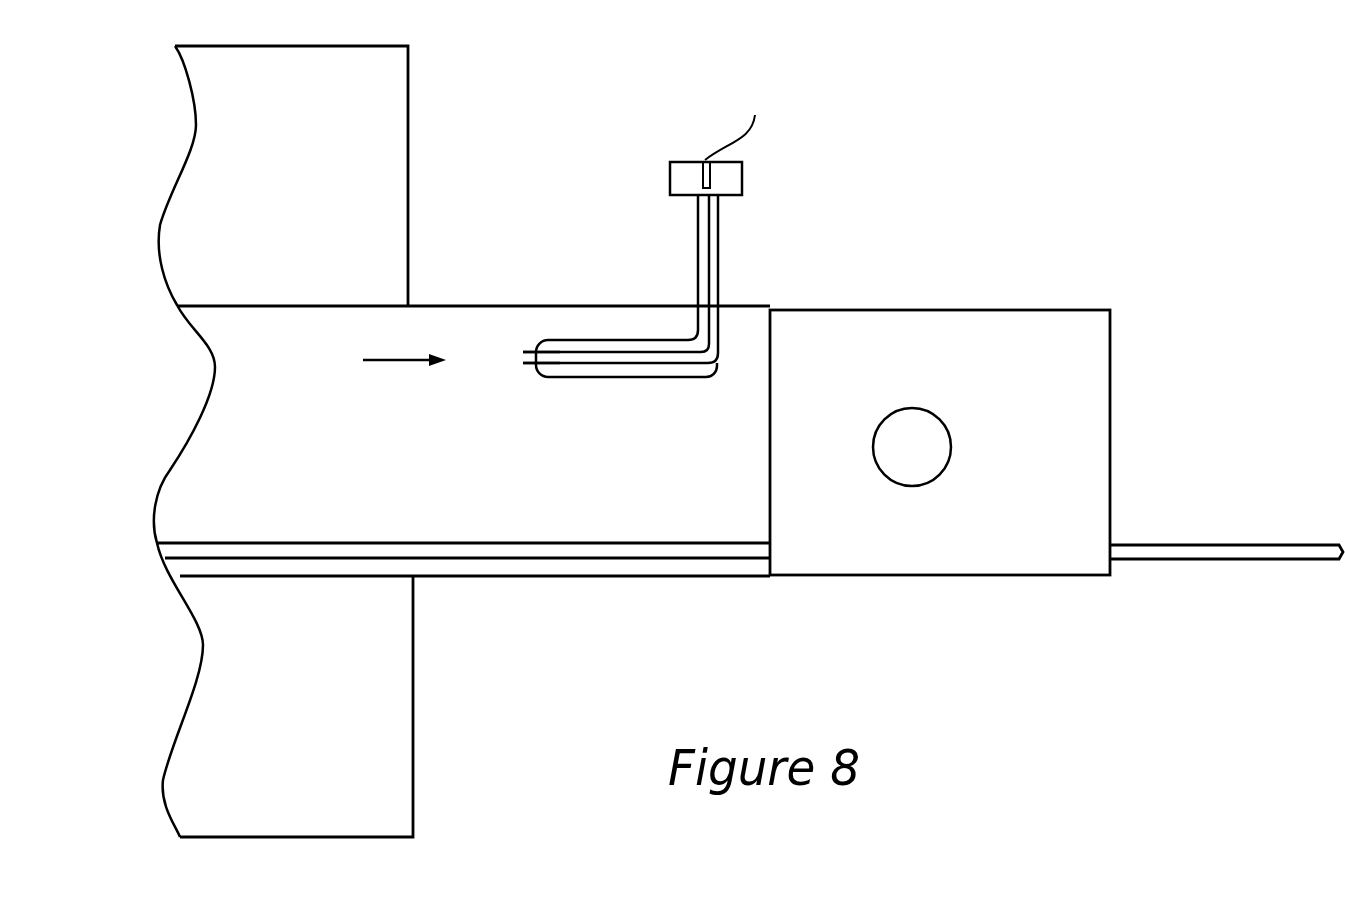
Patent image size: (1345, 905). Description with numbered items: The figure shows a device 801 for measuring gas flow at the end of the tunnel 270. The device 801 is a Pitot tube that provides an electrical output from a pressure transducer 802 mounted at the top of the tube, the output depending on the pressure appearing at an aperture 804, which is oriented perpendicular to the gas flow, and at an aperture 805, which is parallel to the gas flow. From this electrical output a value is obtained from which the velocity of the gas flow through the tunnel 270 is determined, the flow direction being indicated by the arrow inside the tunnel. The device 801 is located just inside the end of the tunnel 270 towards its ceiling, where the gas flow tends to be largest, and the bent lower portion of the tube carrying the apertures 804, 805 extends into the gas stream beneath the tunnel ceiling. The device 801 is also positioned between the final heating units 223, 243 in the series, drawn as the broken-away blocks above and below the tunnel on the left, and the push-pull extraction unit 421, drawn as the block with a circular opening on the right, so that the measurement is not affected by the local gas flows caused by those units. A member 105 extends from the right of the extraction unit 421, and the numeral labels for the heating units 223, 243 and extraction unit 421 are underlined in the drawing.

The final heating unit 223 is at (305, 182).
The final heating unit 243 is at (308, 715).
The tunnel 270 is at (578, 576).
The push-pull extraction unit 421 is at (1046, 370).
The rod / shaft 105 is at (1235, 545).
The device for measuring gas flow 801 is at (720, 242).
The pressure transducer 802 is at (703, 178).
The aperture 804 is at (523, 352).
The aperture 805 is at (606, 345).